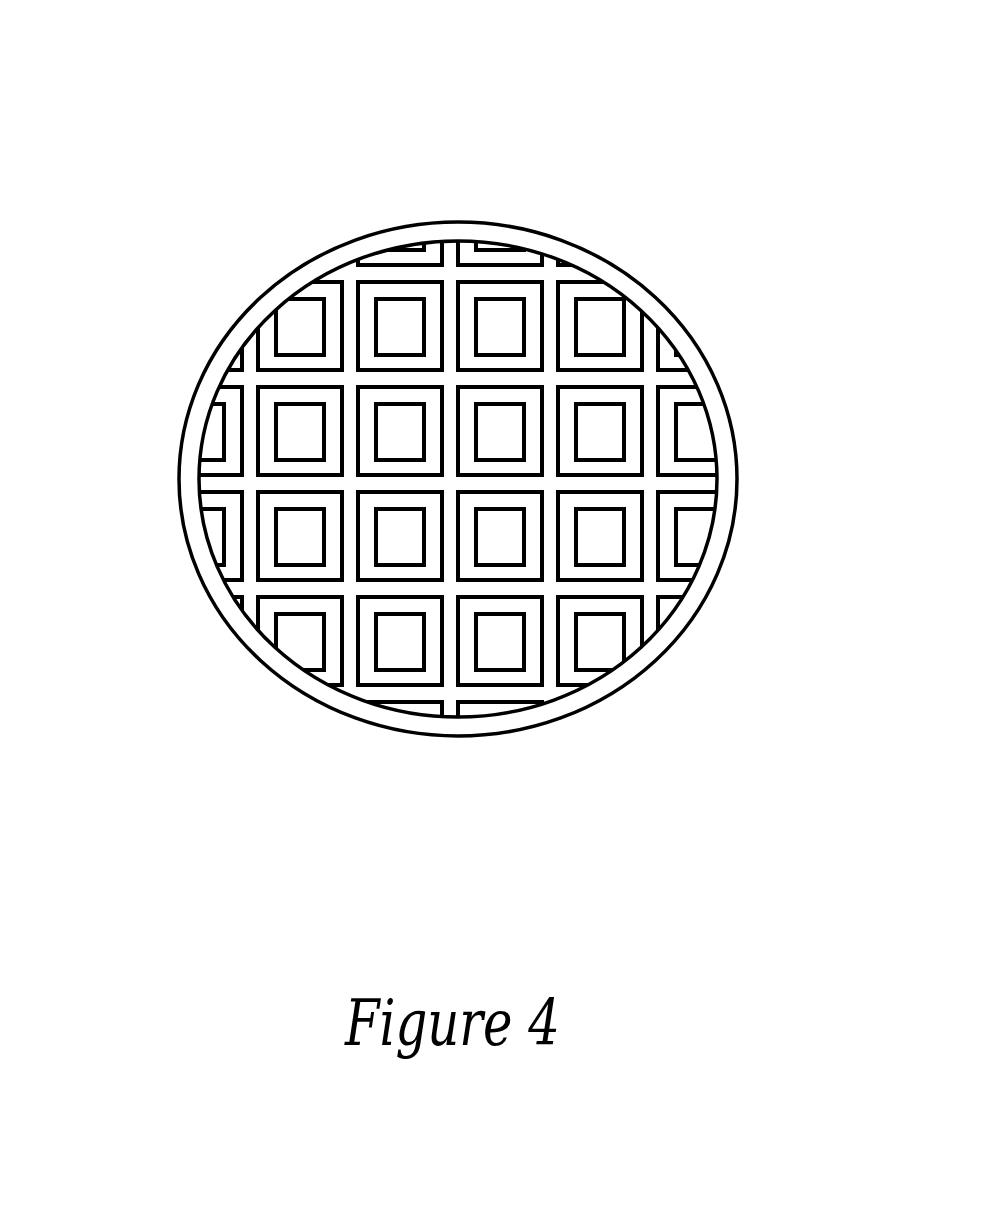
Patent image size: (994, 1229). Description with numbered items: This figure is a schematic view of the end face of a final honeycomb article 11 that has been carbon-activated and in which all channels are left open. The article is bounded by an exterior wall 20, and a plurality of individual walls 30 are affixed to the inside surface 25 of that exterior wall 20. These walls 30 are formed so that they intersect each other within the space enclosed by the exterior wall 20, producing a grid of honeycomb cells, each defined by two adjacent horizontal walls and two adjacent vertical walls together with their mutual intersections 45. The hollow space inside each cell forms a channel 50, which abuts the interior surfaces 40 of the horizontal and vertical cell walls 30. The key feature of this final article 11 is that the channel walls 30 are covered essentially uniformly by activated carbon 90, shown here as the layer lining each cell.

The final honeycomb article 11 is at (651, 151).
The exterior wall 20 is at (708, 365).
The inside surface 25 is at (715, 527).
The individual walls 30 is at (650, 535).
The interior surfaces 40 is at (330, 320).
The mutual intersections 45 is at (250, 482).
The channels 50 is at (302, 540).
The activated carbon 90 is at (428, 673).